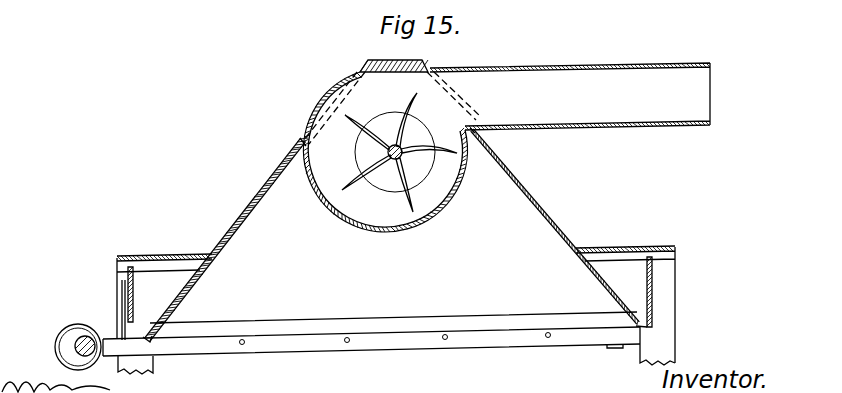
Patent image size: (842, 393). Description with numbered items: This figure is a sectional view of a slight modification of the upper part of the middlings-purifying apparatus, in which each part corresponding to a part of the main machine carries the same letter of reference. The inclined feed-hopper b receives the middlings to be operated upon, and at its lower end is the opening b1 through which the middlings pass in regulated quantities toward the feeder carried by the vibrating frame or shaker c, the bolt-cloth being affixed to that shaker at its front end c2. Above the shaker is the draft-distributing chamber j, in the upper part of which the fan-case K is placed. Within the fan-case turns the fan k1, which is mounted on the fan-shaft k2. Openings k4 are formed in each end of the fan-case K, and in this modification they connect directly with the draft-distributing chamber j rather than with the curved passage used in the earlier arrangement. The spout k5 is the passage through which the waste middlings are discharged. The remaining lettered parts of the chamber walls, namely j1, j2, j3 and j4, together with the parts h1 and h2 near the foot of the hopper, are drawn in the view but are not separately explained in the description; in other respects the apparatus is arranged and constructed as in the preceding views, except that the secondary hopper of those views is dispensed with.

The fan-case K is at (395, 139).
The fan k1 is at (383, 141).
The fan-shaft k2 is at (403, 146).
The openings k4 is at (404, 118).
The spout k5 is at (708, 74).
The draft-distributing chamber j is at (392, 171).
The left inclined wall j1 is at (226, 240).
The right inclined wall j2 is at (519, 191).
The lower end of right wall j3 is at (636, 321).
The junction of wall and casing j4 is at (303, 142).
The inclined hopper b is at (396, 304).
The opening b1 is at (385, 292).
The vibrating frame or shaker c is at (389, 343).
The front end c2 is at (78, 341).
The rod h1 is at (134, 310).
The bracket h2 is at (150, 334).